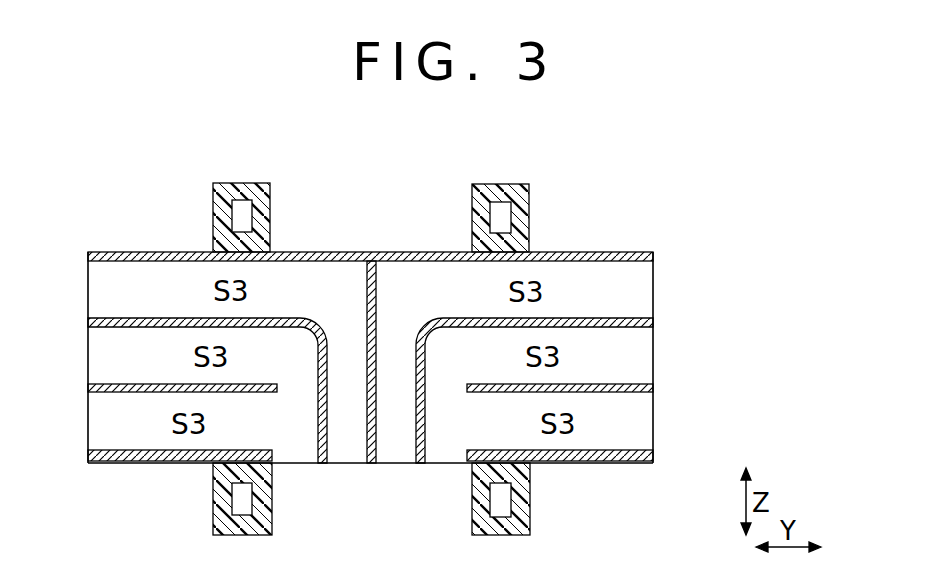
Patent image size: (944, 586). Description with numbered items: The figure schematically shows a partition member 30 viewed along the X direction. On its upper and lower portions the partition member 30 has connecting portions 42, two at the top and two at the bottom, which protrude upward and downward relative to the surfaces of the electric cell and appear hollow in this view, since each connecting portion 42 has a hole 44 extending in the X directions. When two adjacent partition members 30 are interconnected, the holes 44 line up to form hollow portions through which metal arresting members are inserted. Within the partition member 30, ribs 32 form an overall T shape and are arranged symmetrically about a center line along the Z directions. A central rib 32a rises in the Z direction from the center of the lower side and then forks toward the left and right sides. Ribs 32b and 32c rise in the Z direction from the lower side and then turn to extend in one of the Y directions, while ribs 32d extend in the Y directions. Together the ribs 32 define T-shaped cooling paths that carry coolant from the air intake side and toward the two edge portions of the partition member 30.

The partition member 30 is at (648, 252).
The ribs 32 is at (370, 417).
The central rib 32a is at (367, 420).
The rib 32b is at (416, 420).
The rib 32c is at (467, 455).
The ribs 32d is at (470, 395).
The connecting portions 42 is at (218, 196).
The hole 44 is at (238, 222).